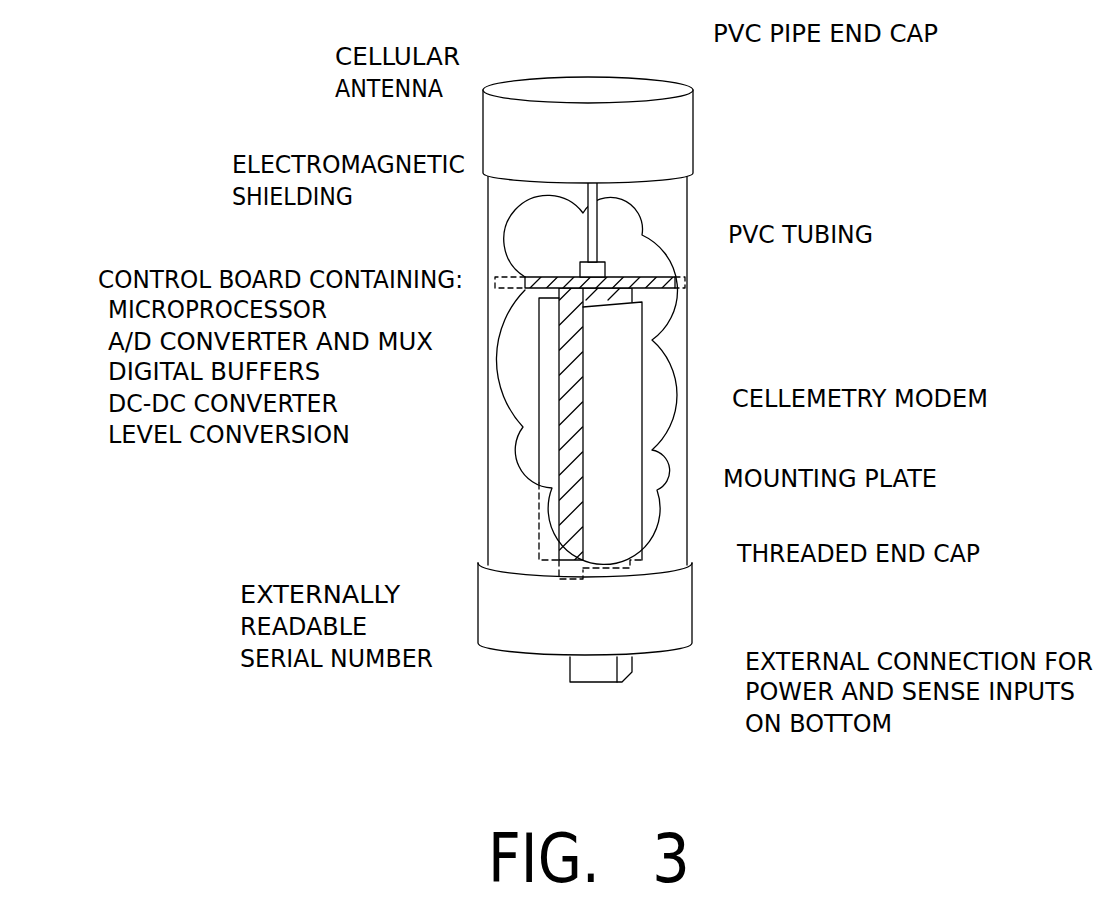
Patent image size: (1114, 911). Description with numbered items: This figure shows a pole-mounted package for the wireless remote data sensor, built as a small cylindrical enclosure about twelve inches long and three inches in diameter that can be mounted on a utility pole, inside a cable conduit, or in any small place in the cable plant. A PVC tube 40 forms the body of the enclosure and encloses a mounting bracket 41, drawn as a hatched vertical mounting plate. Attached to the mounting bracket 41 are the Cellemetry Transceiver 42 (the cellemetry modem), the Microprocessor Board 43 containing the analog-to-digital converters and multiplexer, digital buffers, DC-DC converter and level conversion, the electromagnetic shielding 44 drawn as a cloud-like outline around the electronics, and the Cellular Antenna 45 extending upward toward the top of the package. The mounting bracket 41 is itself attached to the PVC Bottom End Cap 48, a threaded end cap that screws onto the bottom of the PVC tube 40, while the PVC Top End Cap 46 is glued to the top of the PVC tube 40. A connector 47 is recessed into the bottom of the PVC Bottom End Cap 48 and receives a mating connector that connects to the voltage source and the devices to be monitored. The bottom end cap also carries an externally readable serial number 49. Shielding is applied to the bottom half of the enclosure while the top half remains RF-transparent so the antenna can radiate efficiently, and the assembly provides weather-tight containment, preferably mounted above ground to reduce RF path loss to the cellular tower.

The PVC tube 40 is at (685, 223).
The mounting bracket 41 is at (575, 523).
The Cellemetry Transceiver 42 is at (633, 423).
The Microprocessor Board 43 is at (547, 393).
The electromagnetic shielding 44 is at (508, 273).
The Cellular Antenna 45 is at (568, 225).
The PVC Top End Cap 46 is at (693, 110).
The connector 47 is at (680, 647).
The PVC Bottom End Cap 48 is at (678, 593).
The externally readable serial number 49 is at (488, 612).